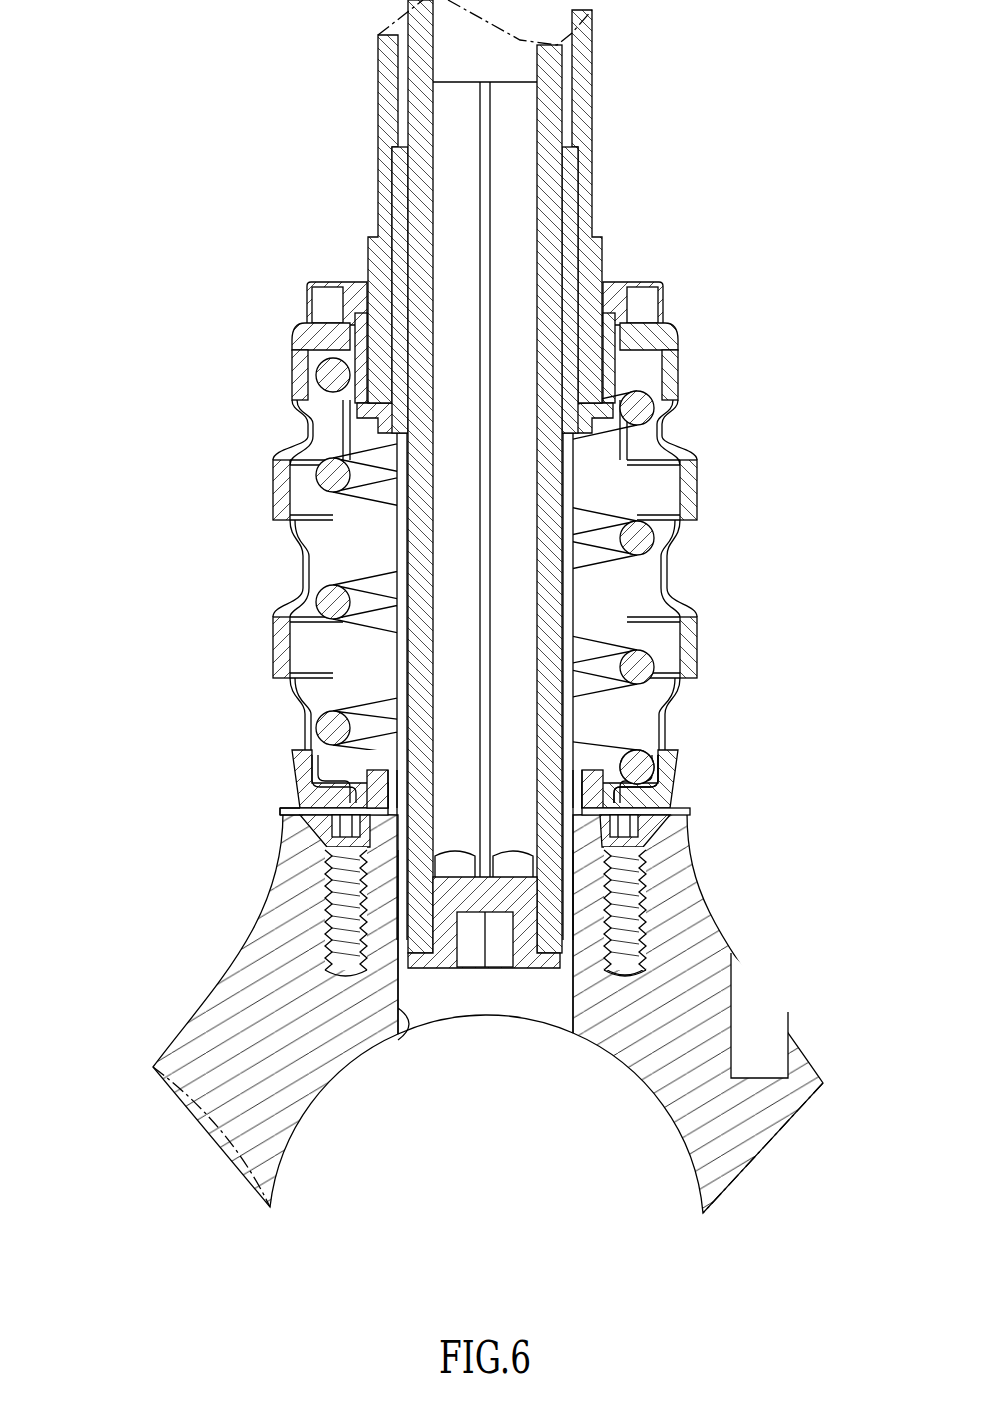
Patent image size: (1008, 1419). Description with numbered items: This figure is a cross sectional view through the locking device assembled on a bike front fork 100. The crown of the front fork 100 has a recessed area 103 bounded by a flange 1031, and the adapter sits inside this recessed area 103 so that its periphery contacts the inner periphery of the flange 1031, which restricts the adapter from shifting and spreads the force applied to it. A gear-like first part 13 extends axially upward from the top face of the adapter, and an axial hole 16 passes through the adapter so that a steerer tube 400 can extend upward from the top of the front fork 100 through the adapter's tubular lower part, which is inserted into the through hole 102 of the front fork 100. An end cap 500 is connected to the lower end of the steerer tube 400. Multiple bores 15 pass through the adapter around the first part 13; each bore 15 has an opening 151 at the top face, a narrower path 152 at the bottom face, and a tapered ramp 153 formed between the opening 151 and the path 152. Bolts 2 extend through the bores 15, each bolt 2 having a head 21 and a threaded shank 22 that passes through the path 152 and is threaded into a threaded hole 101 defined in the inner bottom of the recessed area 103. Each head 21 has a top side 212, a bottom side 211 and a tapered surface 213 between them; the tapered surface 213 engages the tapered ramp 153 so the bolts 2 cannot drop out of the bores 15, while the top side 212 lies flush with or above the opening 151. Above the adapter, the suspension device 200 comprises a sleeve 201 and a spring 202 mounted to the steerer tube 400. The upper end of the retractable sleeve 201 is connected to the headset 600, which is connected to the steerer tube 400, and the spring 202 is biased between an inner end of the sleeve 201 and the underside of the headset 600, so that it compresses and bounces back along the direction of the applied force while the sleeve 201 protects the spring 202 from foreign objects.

The front fork 100 is at (585, 1098).
The threaded holes 101 is at (645, 937).
The through hole 102 is at (420, 1023).
The recessed area 103 is at (280, 800).
The flange 1031 is at (182, 768).
The first part 13 is at (382, 775).
The bores 15 is at (257, 892).
The opening 151 is at (290, 813).
The path 152 is at (327, 870).
The tapered ramp 153 is at (320, 825).
The axial hole 16 is at (553, 762).
The bolts 2 is at (610, 863).
The head 21 is at (589, 803).
The bottom side 211 is at (660, 857).
The top side 212 is at (660, 790).
The tapered surface 213 is at (658, 818).
The threaded shank 22 is at (625, 893).
The suspension device 200 is at (568, 556).
The sleeve 201 is at (680, 370).
The spring 202 is at (648, 423).
The steerer tube 400 is at (547, 137).
The end cap 500 is at (532, 960).
The headset 600 is at (625, 278).